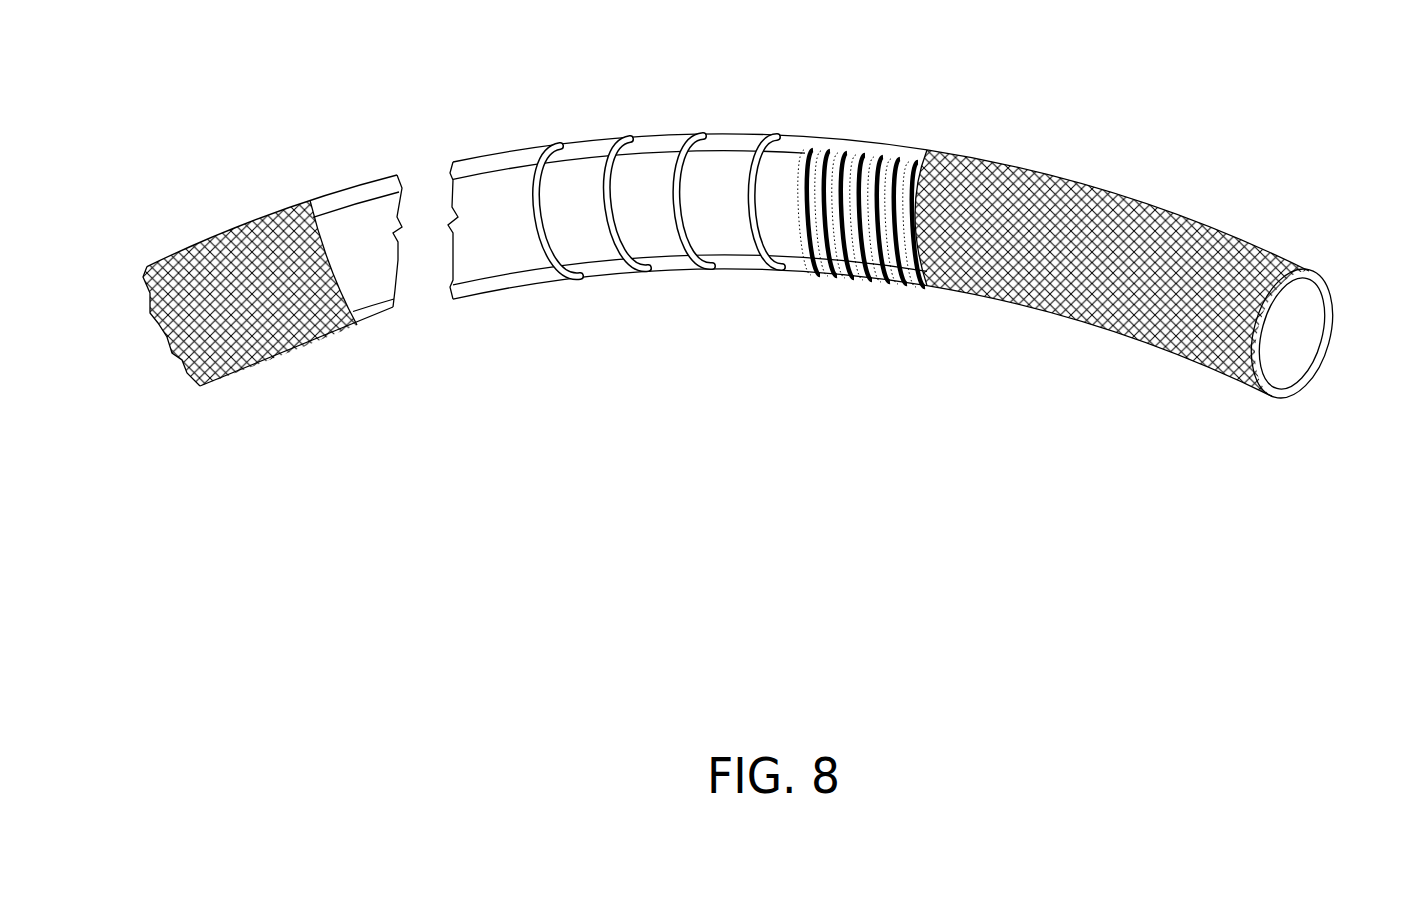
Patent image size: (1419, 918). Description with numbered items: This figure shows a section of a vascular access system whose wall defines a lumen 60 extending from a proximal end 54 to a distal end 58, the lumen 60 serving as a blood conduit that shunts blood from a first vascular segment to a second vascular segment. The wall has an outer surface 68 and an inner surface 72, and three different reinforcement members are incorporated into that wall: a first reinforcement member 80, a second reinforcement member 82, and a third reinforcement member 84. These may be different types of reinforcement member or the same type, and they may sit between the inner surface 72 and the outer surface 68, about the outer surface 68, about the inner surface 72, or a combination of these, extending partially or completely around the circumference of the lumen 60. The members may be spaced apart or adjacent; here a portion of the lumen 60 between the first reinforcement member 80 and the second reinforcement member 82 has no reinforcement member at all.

The proximal end 54 is at (184, 138).
The distal end 58 is at (1368, 190).
The lumen 60 is at (1290, 330).
The outer surface 68 is at (337, 192).
The inner surface 72 is at (522, 271).
The first reinforcement member 80 is at (200, 245).
The second reinforcement member 82 is at (537, 193).
The third reinforcement member 84 is at (807, 147).